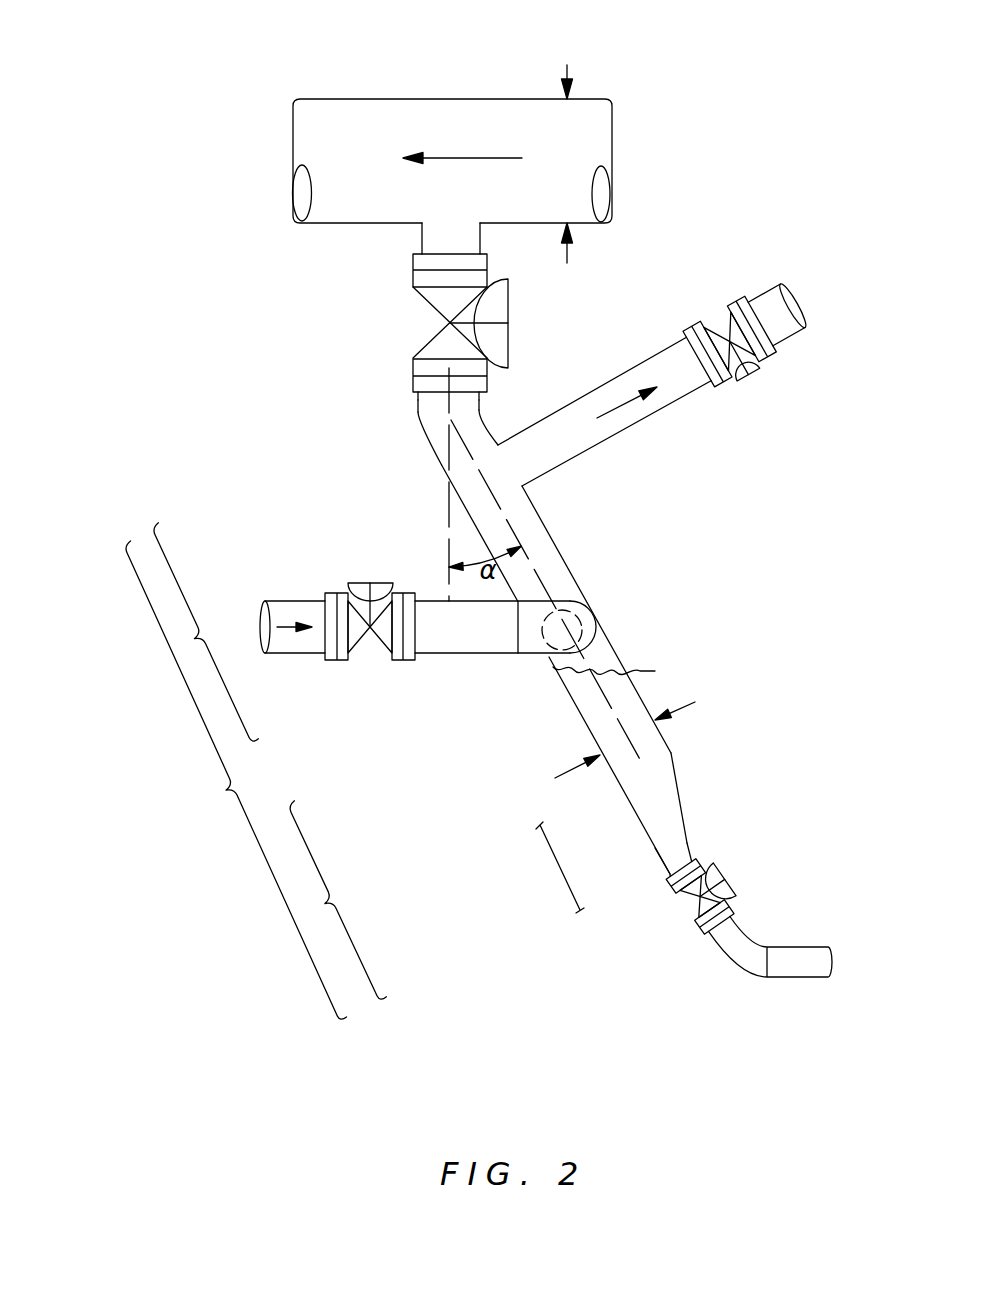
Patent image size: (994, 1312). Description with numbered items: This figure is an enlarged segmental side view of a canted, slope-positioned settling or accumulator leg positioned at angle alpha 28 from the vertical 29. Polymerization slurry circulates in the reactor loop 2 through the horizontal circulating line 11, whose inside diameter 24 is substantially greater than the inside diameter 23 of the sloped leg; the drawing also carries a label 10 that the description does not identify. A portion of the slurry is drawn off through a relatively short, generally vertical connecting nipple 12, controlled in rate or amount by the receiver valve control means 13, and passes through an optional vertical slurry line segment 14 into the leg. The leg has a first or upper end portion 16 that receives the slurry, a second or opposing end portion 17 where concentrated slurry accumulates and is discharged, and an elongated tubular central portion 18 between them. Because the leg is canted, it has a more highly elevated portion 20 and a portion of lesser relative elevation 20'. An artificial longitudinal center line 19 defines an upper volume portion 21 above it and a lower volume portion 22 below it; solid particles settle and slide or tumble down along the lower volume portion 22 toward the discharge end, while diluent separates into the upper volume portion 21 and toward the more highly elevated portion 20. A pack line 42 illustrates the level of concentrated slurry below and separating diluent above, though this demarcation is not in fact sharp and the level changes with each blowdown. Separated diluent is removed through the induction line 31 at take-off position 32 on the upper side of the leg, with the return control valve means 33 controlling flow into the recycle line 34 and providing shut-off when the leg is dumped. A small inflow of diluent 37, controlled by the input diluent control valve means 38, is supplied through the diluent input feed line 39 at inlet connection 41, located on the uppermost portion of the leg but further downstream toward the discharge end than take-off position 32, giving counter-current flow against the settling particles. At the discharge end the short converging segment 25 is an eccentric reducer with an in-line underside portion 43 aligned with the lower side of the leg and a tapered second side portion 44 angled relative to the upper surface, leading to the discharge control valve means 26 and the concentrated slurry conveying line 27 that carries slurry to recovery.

The reactor loop 2 is at (613, 138).
The flow direction arrow 10 is at (467, 158).
The circulating line 11 is at (352, 97).
The connecting nipple 12 is at (421, 237).
The receiver valve control means 13 is at (447, 323).
The vertical slurry line segment 14 is at (417, 400).
The first or upper end portion 16 is at (420, 432).
The second or opposing end portion 17 is at (671, 755).
The central portion 18 is at (236, 780).
The artificial longitudinal center line 19 is at (487, 479).
The more highly elevated portion 20 is at (206, 632).
The portion of lesser relative elevation 20' is at (338, 900).
The upper volume portion 21 is at (587, 595).
The lower volume portion 22 is at (573, 700).
The inside diameter of the sloped leg 23 is at (623, 740).
The inside diameter of the loop 24 is at (417, 420).
The converging tubular segment 25 is at (550, 867).
The discharge control valve means 26 is at (668, 917).
The concentrated slurry tubular conveying line 27 is at (758, 945).
The angle alpha 28 is at (492, 627).
The vertical 29 is at (445, 512).
The diluent recycle induction line 31 is at (561, 404).
The take-off position 32 is at (535, 486).
The return control valve means 33 is at (726, 333).
The recycle line 34 is at (781, 290).
The inflow of diluent 37 is at (262, 627).
The input diluent control valve means 38 is at (371, 636).
The diluent input feed line 39 is at (467, 655).
The further diluent inlet connection 41 is at (553, 643).
The pack line 42 is at (618, 672).
The first in-line underside portion 43 is at (638, 827).
The tapered opposing second side portion 44 is at (682, 815).